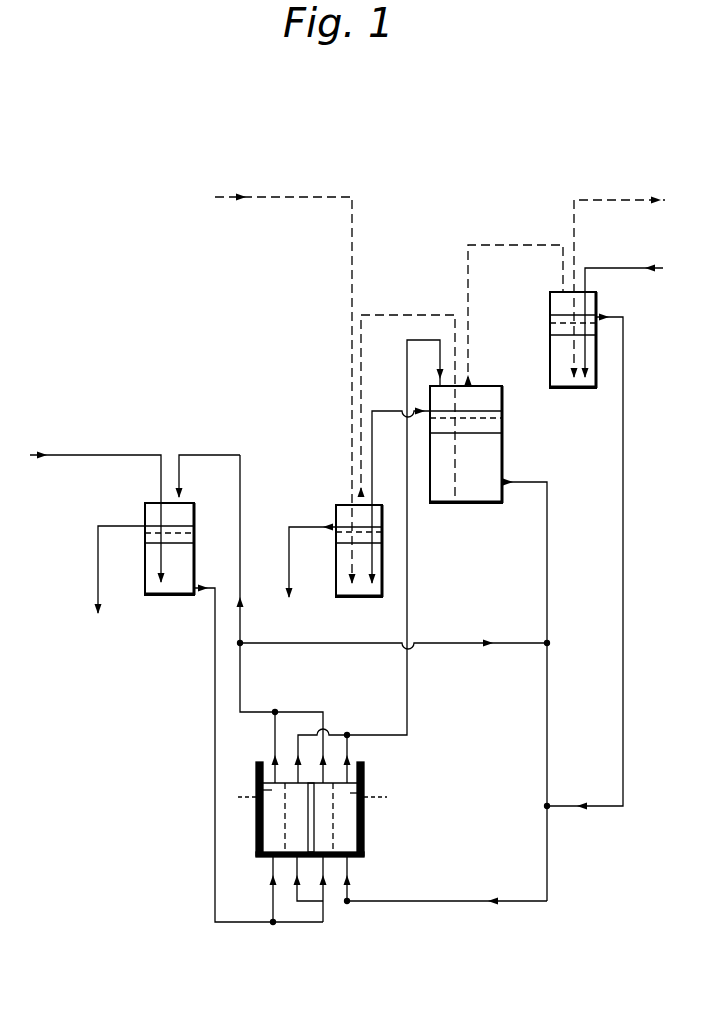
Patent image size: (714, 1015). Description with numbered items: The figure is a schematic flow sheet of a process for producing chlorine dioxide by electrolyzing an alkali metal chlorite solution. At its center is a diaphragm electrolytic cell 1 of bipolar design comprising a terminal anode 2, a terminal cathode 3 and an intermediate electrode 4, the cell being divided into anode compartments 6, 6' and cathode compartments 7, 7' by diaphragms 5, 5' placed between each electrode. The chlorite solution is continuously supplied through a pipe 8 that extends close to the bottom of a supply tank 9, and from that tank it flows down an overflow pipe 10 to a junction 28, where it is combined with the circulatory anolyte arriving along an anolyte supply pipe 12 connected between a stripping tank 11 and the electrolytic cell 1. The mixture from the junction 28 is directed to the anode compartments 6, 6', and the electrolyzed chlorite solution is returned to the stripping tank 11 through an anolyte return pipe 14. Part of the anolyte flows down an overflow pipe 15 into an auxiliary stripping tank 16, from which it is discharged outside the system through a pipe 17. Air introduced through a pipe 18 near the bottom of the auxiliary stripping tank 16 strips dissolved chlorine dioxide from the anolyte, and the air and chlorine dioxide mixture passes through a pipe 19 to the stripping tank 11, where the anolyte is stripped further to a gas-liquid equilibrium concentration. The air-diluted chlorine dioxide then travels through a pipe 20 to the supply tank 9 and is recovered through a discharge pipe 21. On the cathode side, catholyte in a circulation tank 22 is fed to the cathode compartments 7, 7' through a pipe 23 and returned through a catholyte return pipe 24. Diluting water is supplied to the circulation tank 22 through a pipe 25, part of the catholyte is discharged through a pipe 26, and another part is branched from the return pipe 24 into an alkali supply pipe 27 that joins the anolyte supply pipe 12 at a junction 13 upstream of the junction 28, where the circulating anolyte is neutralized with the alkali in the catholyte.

The diaphragm electrolytic cell 1 is at (418, 782).
The terminal anode 2 is at (364, 832).
The terminal cathode 3 is at (256, 833).
The intermediate electrode 4 is at (304, 838).
The diaphragm 5 is at (339, 890).
The diaphragm 5' is at (278, 902).
The anode compartment 6 is at (382, 770).
The anode compartment 6' is at (229, 817).
The cathode compartment 7 is at (362, 817).
The cathode compartment 7' is at (223, 784).
The pipe 8 is at (641, 269).
The supply tank 9 is at (598, 360).
The overflow pipe 10 is at (624, 500).
The stripping tank 11 is at (503, 425).
The anolyte supply pipe 12 is at (548, 733).
The junction 13 is at (550, 643).
The anolyte return pipe 14 is at (409, 602).
The overflow pipe 15 is at (372, 492).
The auxiliary stripping tank 16 is at (337, 505).
The pipe 17 is at (289, 527).
The pipe 18 is at (352, 237).
The pipe 19 is at (354, 331).
The pipe 20 is at (500, 245).
The discharge pipe 21 is at (606, 196).
The circulation tank 22 is at (157, 596).
The pipe 23 is at (216, 742).
The catholyte return pipe 24 is at (238, 694).
The pipe 25 is at (113, 440).
The pipe 26 is at (98, 569).
The alkali supply pipe 27 is at (333, 644).
The junction 28 is at (546, 806).